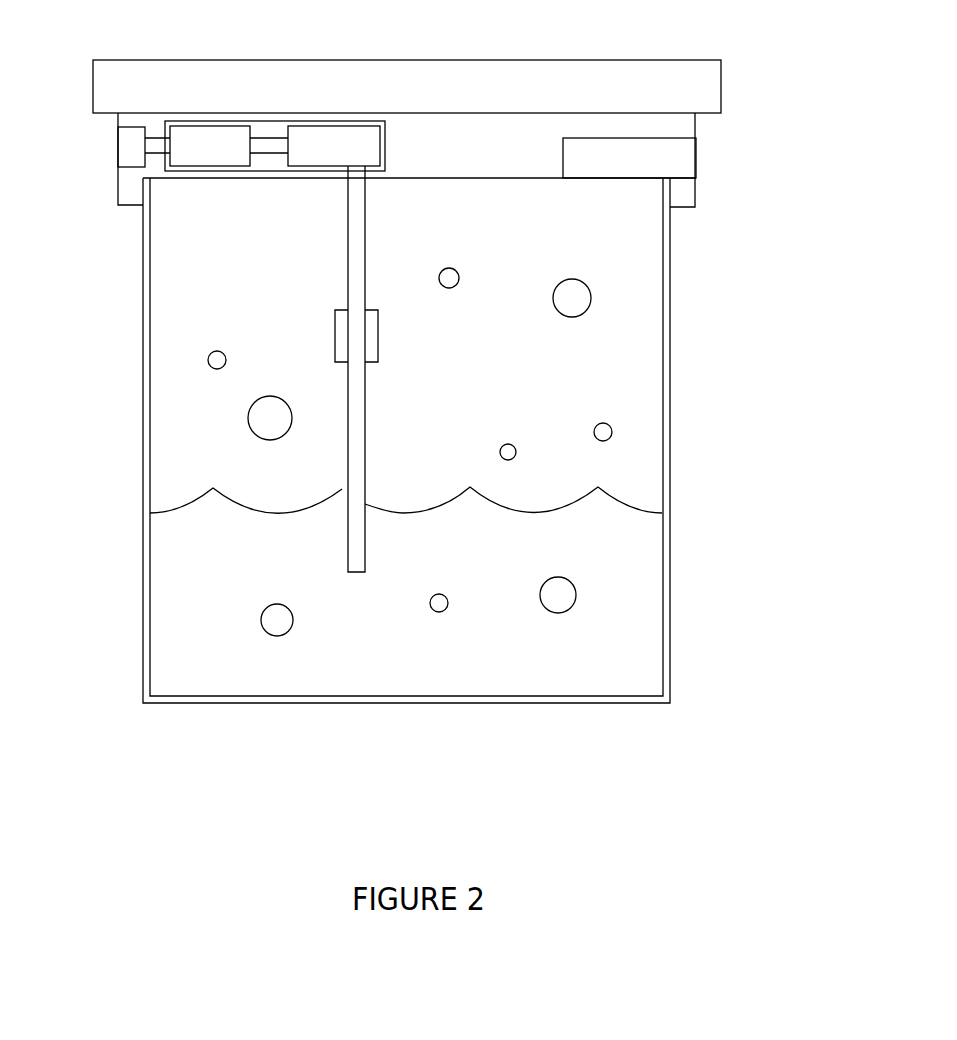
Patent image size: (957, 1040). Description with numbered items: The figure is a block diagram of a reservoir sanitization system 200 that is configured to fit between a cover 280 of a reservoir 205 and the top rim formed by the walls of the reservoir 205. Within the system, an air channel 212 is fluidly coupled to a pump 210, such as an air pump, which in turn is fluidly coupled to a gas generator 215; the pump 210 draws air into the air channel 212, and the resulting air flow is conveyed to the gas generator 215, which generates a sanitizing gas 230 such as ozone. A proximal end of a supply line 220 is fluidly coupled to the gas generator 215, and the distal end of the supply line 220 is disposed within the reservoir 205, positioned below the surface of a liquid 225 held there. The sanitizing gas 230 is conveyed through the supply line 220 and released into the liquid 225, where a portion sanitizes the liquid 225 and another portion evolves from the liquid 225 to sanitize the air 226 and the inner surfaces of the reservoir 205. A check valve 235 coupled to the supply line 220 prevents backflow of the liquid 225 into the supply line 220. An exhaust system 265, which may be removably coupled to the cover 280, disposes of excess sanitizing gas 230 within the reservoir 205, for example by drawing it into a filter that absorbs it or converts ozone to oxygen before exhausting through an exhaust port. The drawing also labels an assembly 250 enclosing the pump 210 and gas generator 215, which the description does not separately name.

The reservoir sanitization system 200 is at (519, 145).
The reservoir 205 is at (143, 648).
The pump 210 is at (188, 126).
The air channel 212 is at (128, 167).
The gas generator 215 is at (317, 126).
The supply line 220 is at (348, 403).
The liquid 225 is at (550, 630).
The air 226 is at (585, 234).
The sanitizing gas 230 is at (612, 422).
The check valve 235 is at (335, 350).
The gas supply assembly 250 is at (374, 121).
The exhaust system 265 is at (682, 138).
The cover 280 is at (453, 60).